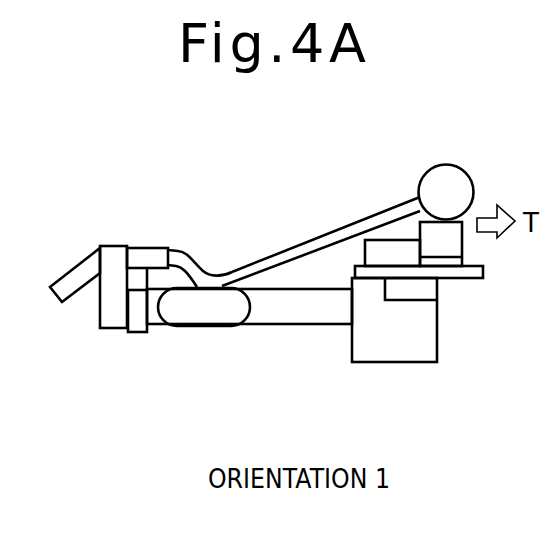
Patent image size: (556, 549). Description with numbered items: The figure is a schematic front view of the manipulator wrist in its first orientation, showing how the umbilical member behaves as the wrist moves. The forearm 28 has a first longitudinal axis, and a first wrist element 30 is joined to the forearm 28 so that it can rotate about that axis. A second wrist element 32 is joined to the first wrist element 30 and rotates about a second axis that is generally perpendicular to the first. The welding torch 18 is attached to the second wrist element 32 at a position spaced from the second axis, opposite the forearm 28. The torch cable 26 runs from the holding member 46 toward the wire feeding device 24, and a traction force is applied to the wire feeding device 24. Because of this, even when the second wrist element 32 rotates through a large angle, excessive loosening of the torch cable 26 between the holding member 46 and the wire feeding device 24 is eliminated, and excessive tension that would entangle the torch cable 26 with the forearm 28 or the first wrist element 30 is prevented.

The welding torch 18 is at (75, 273).
The wire feeding device 24 is at (445, 182).
The torch cable 26 is at (337, 225).
The forearm 28 is at (397, 352).
The first wrist element 30 is at (290, 315).
The second wrist element 32 is at (155, 322).
The holding member 46 is at (203, 270).